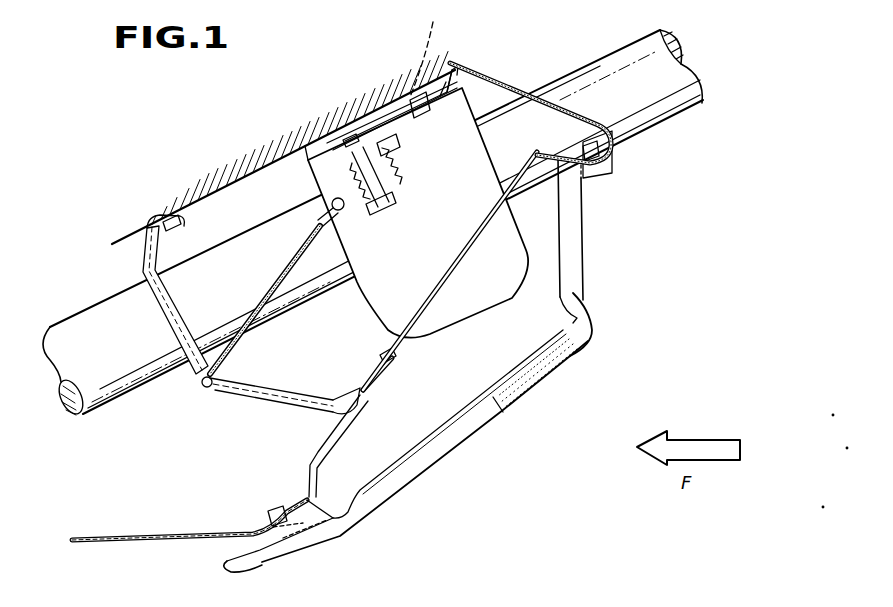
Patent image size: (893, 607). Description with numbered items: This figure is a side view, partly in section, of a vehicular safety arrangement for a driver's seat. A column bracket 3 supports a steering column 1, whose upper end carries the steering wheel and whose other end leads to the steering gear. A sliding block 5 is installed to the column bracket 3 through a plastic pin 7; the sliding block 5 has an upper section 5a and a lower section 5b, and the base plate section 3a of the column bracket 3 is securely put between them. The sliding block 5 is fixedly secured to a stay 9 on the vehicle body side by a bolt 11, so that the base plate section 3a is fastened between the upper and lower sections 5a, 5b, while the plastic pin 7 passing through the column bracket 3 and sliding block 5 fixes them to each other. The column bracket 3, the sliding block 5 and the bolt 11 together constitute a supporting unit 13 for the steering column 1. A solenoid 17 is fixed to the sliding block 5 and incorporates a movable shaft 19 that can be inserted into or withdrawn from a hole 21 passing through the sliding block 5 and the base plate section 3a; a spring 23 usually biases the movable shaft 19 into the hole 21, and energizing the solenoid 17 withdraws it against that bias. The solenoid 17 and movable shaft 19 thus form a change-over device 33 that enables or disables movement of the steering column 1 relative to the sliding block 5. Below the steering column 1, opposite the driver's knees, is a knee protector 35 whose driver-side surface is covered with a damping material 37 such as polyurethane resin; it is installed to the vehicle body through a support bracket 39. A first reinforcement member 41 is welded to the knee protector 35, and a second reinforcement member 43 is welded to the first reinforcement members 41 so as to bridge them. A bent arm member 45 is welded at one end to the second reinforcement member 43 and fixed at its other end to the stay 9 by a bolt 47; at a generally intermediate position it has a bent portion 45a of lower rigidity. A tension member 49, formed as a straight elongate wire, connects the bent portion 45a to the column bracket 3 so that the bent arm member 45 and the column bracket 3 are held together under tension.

The steering column 1 is at (657, 113).
The column bracket 3 is at (315, 168).
The base plate section 3a is at (364, 115).
The sliding block 5 is at (399, 109).
The upper section 5a is at (440, 90).
The lower section 5b is at (432, 114).
The plastic pin 7 is at (424, 50).
The stay 9 is at (220, 146).
The bolt 11 is at (400, 142).
The supporting unit 13 is at (348, 121).
The solenoid 17 is at (305, 222).
The movable shaft 19 is at (377, 206).
The hole 21 is at (302, 135).
The spring 23 is at (385, 178).
The change-over device 33 is at (371, 168).
The knee protector 35 is at (487, 431).
The damping material 37 is at (563, 360).
The support bracket 39 is at (508, 82).
The first reinforcement member 41 is at (305, 452).
The second reinforcement member 43 is at (383, 386).
The bent arm member 45 is at (249, 403).
The bent portion 45a is at (208, 390).
The bolt 47 is at (168, 228).
The tension member 49 is at (276, 290).